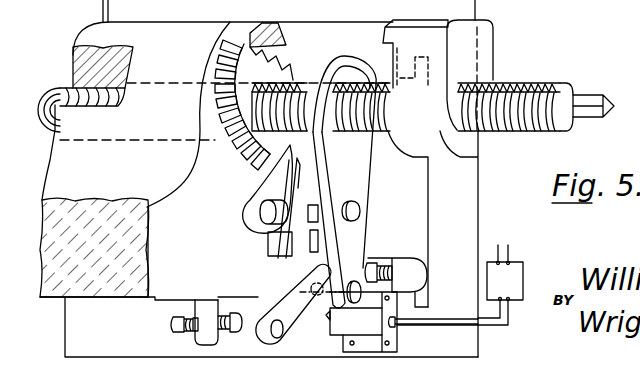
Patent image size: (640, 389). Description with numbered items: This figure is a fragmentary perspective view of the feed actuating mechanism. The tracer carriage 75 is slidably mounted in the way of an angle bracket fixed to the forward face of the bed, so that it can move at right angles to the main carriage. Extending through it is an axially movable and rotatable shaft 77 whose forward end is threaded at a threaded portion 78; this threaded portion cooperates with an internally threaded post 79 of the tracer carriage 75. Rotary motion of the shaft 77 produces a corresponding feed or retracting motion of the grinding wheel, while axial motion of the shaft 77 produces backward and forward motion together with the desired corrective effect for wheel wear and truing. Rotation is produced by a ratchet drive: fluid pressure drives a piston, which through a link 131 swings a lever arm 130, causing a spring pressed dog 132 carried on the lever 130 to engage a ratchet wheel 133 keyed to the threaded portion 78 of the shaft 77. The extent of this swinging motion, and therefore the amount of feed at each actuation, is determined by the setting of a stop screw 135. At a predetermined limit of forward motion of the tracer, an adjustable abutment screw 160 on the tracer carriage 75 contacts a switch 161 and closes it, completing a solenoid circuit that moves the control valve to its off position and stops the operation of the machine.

The tracer carriage 75 is at (160, 268).
The shaft 77 is at (40, 100).
The threaded portion 78 is at (573, 82).
The internally threaded post 79 is at (150, 35).
The lever arm 130 is at (357, 186).
The link 131 is at (289, 312).
The spring pressed dog 132 is at (244, 199).
The ratchet wheel 133 is at (272, 72).
The stop screw 135 is at (378, 256).
The adjustable abutment screw 160 is at (240, 312).
The switch 161 is at (325, 323).